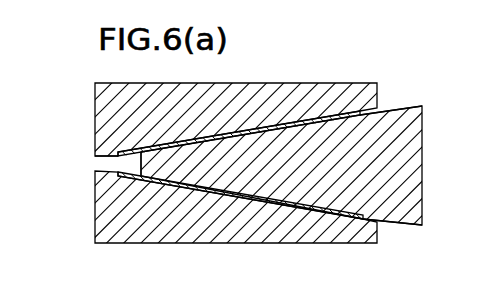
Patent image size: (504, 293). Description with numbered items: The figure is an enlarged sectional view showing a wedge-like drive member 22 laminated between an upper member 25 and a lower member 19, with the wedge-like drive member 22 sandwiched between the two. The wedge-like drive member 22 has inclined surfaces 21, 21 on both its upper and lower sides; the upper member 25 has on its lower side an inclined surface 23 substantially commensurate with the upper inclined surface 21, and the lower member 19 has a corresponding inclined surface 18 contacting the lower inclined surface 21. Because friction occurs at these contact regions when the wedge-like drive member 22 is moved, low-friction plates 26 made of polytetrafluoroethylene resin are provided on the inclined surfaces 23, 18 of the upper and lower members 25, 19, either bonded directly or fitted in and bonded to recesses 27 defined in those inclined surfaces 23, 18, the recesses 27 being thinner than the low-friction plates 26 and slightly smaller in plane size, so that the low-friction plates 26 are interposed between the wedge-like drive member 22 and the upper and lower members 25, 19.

The upper member 25 is at (95, 115).
The lower member 19 is at (95, 218).
The wedge-like drive member 22 is at (426, 163).
The inclined surface 21 is at (400, 108).
The low-friction plate 26 is at (327, 117).
The recess 27 is at (284, 122).
The inclined surface 18 is at (96, 168).
The inclined surface 23 is at (96, 157).